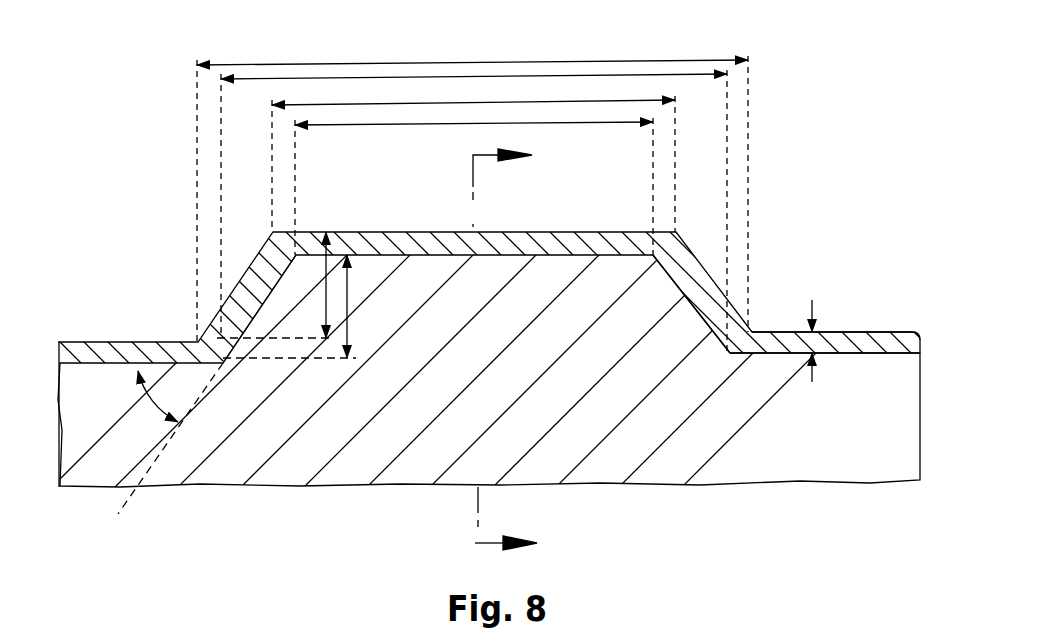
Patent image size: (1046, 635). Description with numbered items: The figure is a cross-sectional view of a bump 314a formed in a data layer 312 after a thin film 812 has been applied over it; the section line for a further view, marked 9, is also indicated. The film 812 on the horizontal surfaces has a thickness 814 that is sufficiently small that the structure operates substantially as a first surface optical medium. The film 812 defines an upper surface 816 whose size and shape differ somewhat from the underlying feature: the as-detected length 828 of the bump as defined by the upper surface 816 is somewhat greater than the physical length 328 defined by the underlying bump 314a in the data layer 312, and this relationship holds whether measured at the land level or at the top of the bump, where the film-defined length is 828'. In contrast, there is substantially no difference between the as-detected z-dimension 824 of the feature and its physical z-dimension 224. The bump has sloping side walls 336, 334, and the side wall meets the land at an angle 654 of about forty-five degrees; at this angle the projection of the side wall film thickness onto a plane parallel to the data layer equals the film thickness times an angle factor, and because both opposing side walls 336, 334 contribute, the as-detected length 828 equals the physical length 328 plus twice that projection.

The data layer 312 is at (832, 444).
The bump 314a is at (645, 305).
The upper surface 816 is at (893, 332).
The thin film 812 is at (848, 340).
The thickness 814 is at (812, 300).
The length 828 is at (472, 175).
The length 328 is at (546, 77).
The length 828' is at (473, 164).
The as-detected z-dimension magnitude 824 is at (326, 272).
The physical z-dimension 224 is at (348, 300).
The left sidewall of mesa 336 is at (224, 364).
The right sidewall of mesa 334 is at (722, 352).
The angle 654 is at (137, 396).
The section line 9- 9 is at (494, 351).